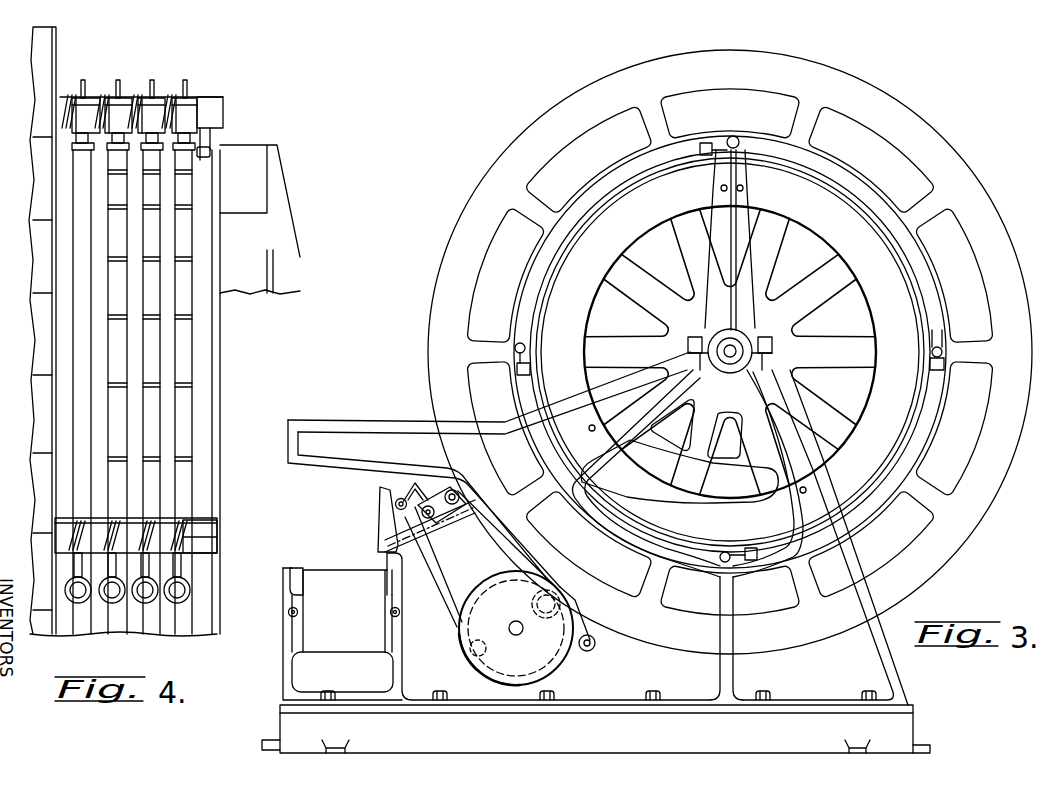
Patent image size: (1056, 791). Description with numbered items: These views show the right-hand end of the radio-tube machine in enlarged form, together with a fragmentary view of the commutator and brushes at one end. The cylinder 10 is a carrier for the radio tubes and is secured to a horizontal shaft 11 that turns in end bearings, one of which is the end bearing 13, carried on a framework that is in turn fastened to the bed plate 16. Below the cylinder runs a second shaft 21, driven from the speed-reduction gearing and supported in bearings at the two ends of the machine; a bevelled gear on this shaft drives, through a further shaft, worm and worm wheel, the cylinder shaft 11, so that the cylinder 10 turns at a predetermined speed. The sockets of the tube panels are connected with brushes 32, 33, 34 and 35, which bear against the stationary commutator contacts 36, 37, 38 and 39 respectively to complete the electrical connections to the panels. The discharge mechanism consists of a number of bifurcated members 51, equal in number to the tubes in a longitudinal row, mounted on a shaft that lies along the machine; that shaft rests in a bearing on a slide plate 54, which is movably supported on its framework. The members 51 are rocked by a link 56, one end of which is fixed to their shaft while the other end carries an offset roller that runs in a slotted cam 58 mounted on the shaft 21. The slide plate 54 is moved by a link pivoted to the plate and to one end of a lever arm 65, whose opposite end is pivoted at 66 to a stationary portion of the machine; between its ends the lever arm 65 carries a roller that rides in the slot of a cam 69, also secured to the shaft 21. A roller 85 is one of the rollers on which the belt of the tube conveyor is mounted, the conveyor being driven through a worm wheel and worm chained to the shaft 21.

In FIG. 3, the cylinder 10 is at (895, 78).
In FIG. 3, the shaft 11 is at (740, 340).
In FIG. 3, the end bearing 13 is at (757, 360).
In FIG. 3, the bed plate 16 is at (913, 729).
In FIG. 3, the shaft 21 is at (530, 636).
In FIG. 4, the brush 32 is at (90, 97).
In FIG. 4, the brush 33 is at (125, 97).
In FIG. 4, the brush 34 is at (158, 97).
In FIG. 4, the brush 35 is at (192, 97).
In FIG. 4, the commutator contact 36 is at (85, 347).
In FIG. 4, the commutator contact 37 is at (118, 365).
In FIG. 4, the commutator contact 38 is at (152, 397).
In FIG. 4, the commutator contact 39 is at (182, 433).
In FIG. 3, the bifurcated member 51 is at (404, 490).
In FIG. 3, the slide plate 54 is at (386, 542).
In FIG. 3, the link 56 is at (442, 600).
In FIG. 3, the slotted cam 58 is at (466, 658).
In FIG. 3, the lever arm 65 is at (505, 533).
In FIG. 3, the pivot 66 is at (593, 640).
In FIG. 3, the cam 69 is at (565, 568).
In FIG. 3, the roller 85 is at (300, 587).